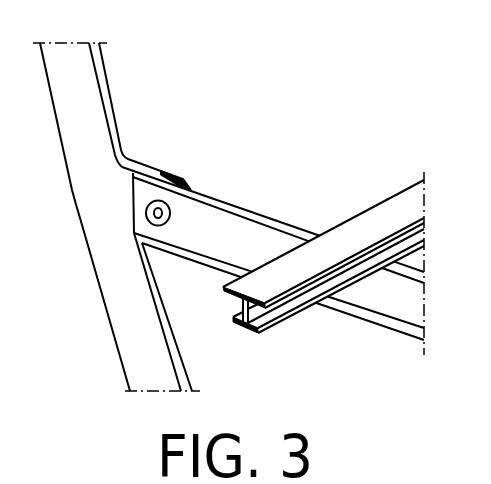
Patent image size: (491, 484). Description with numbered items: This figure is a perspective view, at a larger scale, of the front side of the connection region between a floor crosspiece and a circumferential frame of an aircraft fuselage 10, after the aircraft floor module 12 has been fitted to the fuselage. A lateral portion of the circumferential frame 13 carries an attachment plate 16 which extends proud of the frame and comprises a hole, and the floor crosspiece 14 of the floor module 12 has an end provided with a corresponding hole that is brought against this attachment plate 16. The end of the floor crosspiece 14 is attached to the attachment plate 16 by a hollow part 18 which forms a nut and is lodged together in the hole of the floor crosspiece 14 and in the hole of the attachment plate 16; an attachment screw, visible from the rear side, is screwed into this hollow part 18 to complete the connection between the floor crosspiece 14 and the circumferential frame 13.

The aircraft fuselage 10 is at (227, 217).
The aircraft floor module 12 is at (386, 192).
The circumferential frame 13 is at (117, 292).
The floor crosspiece 14 is at (388, 302).
The attachment plate 16 is at (158, 176).
The hollow part 18 is at (168, 228).